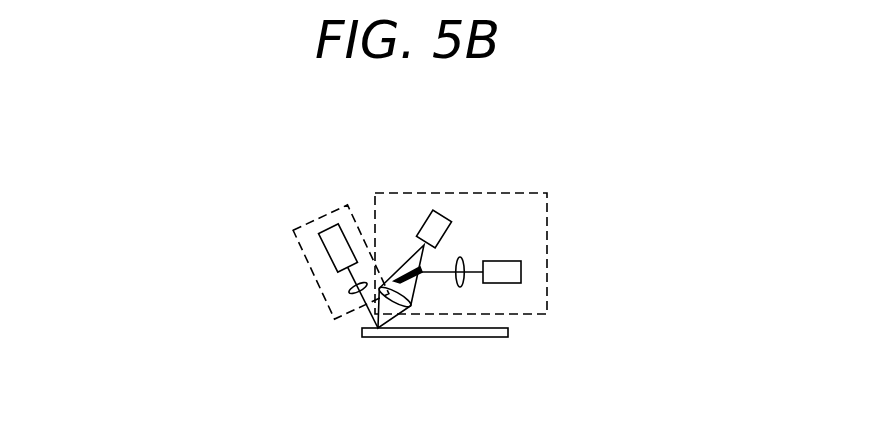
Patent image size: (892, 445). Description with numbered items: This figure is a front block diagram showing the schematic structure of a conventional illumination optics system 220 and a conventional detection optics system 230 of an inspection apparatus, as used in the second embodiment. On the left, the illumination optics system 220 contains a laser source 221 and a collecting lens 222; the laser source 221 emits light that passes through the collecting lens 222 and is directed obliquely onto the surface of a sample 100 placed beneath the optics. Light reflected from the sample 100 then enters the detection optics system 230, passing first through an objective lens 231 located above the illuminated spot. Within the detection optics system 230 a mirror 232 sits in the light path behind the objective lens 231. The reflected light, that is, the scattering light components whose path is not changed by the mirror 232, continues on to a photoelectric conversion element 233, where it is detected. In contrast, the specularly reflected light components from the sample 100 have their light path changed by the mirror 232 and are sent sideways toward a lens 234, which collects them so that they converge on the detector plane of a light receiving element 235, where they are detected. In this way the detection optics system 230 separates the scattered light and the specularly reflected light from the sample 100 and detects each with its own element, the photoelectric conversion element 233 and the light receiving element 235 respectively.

The sample 100 is at (366, 337).
The illumination optics system 220 is at (320, 215).
The laser source 221 is at (320, 250).
The collecting lens 222 is at (350, 294).
The detection optics system 230 is at (510, 193).
The objective lens 231 is at (396, 305).
The mirror 232 is at (407, 267).
The photoelectric conversion element 233 is at (440, 211).
The lens 234 is at (461, 287).
The light receiving element 235 is at (507, 283).